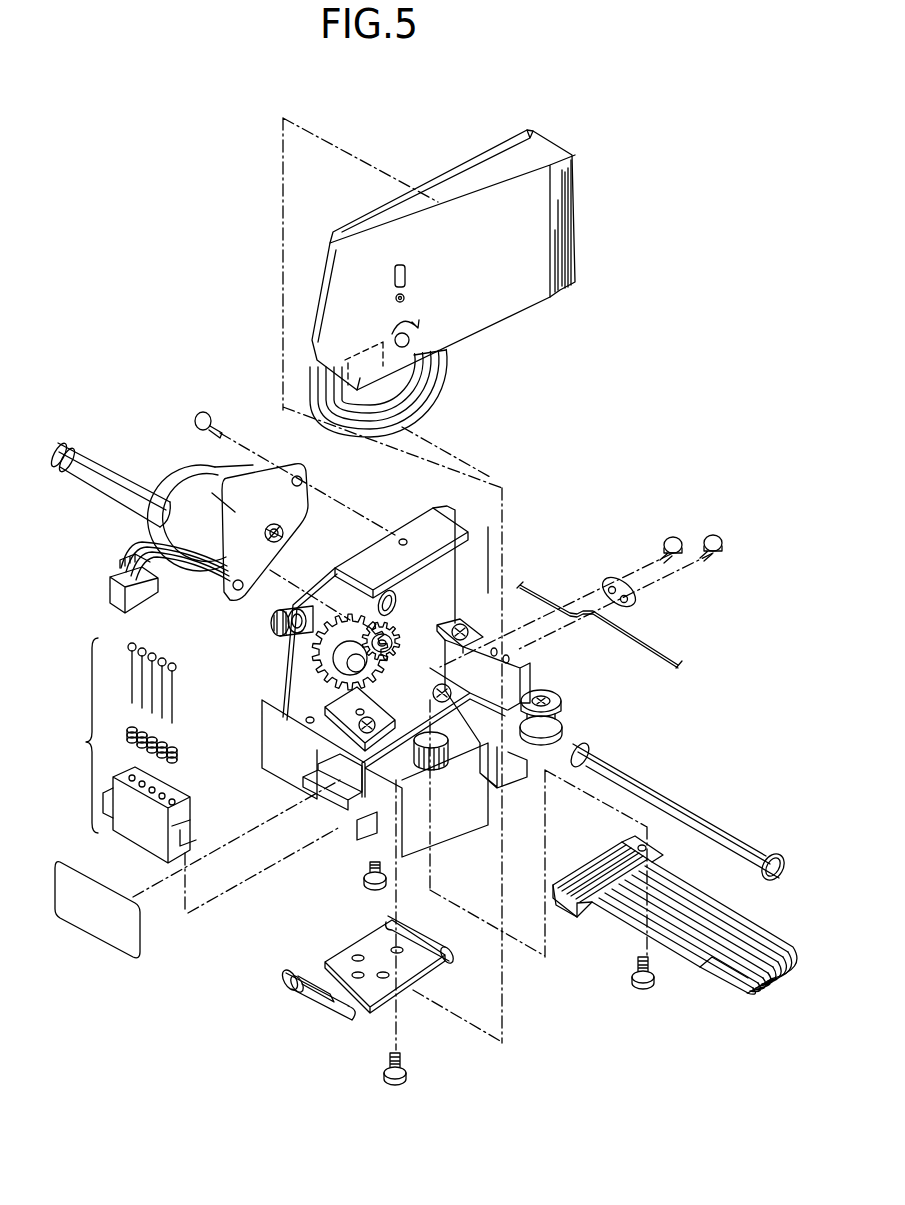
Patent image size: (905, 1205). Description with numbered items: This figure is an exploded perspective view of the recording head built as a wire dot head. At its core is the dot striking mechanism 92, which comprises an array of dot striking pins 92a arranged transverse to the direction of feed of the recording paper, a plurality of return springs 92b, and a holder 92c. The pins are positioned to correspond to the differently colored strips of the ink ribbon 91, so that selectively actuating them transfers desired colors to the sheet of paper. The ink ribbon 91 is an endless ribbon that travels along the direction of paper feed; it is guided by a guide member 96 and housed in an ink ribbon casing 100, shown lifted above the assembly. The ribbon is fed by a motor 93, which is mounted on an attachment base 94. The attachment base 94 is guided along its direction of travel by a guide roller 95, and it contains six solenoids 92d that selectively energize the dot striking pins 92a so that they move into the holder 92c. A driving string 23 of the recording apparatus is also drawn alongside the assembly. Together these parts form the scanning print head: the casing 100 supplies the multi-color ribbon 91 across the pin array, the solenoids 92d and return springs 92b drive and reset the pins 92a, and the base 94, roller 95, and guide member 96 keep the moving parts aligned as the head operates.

The ink ribbon casing 100 is at (575, 231).
The ink ribbon 91 is at (425, 392).
The motor 93 is at (207, 472).
The dot striking mechanism 92 is at (79, 735).
The dot striking pins 92a is at (177, 685).
The return springs 92b is at (178, 748).
The holder 92c is at (200, 830).
The solenoids 92d is at (317, 797).
The attachment base 94 is at (531, 669).
The guide roller 95 is at (563, 722).
The driving string 23 is at (653, 640).
The guide member 96 is at (355, 948).